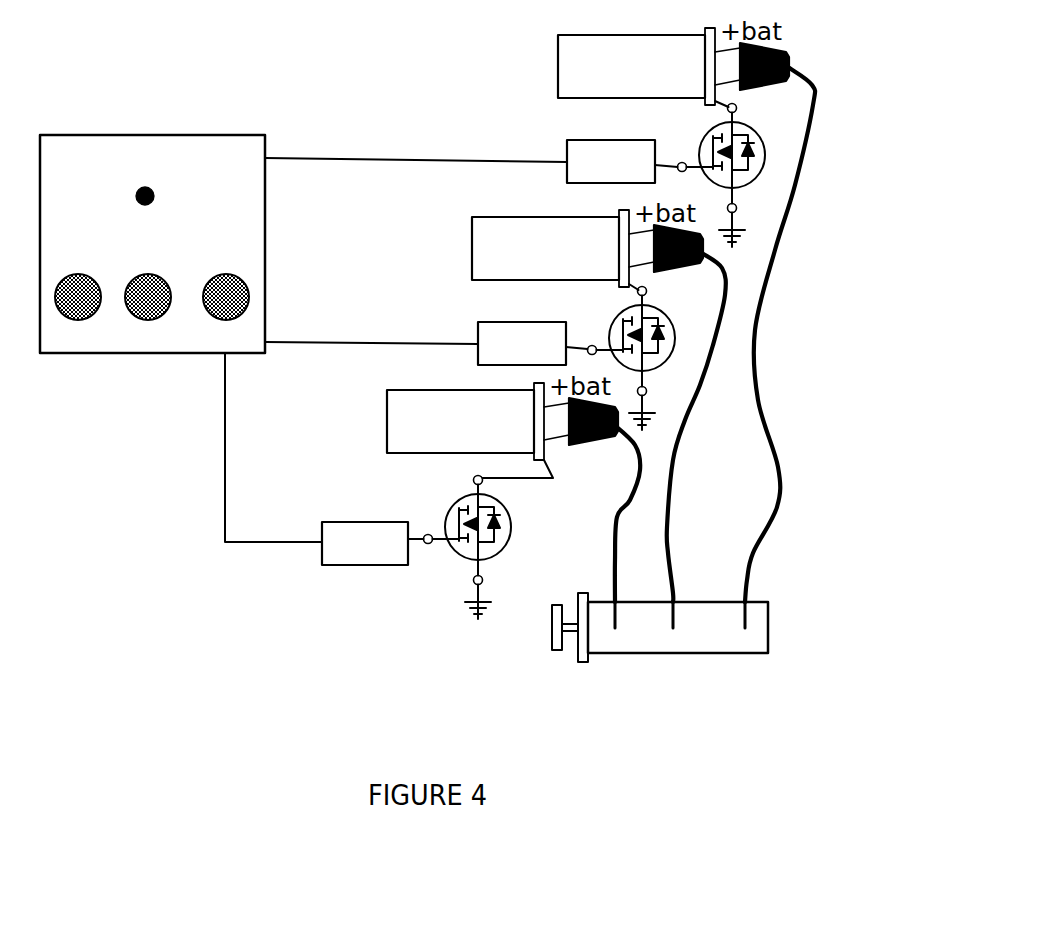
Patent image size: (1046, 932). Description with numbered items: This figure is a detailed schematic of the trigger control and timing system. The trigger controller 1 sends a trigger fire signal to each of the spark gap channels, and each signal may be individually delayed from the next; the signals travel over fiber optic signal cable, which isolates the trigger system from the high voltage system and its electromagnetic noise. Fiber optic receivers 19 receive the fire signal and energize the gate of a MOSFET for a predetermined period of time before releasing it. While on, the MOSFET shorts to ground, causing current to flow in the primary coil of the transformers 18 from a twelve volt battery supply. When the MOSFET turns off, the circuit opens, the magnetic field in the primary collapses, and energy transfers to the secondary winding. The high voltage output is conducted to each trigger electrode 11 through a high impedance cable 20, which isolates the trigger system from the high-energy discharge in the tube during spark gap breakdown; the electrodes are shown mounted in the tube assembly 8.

The trigger controller 1 is at (152, 244).
The transformer 18 is at (588, 239).
The fiber optic receiver 19 is at (488, 352).
The high impedance cable 20 is at (687, 521).
The dispensing head / manifold 8 is at (576, 686).
The trigger electrode 11 is at (634, 638).